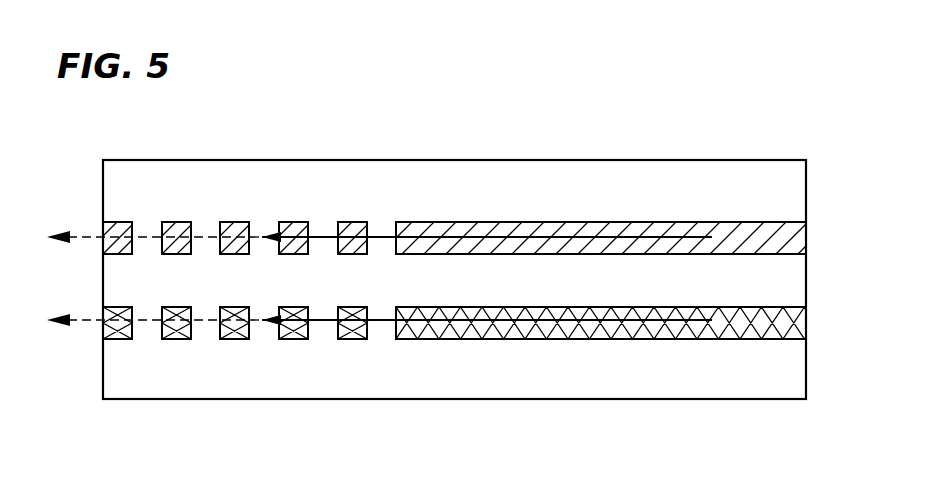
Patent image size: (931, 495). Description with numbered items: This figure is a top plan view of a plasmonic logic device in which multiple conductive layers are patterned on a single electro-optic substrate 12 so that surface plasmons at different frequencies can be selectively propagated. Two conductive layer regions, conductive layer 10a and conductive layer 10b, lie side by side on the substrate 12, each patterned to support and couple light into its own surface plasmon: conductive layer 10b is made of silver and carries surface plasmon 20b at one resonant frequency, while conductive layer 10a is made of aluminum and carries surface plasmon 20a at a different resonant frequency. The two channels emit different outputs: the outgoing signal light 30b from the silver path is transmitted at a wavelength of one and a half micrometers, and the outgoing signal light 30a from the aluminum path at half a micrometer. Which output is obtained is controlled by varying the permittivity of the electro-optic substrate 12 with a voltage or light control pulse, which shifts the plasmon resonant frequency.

The electro-optic substrate 12 is at (417, 201).
The conductive layer 10a is at (467, 219).
The conductive layer 10b is at (480, 344).
The surface plasmon 20a is at (650, 223).
The surface plasmon 20b is at (647, 339).
The outgoing signal light 30a is at (82, 236).
The outgoing signal light 30b is at (82, 321).